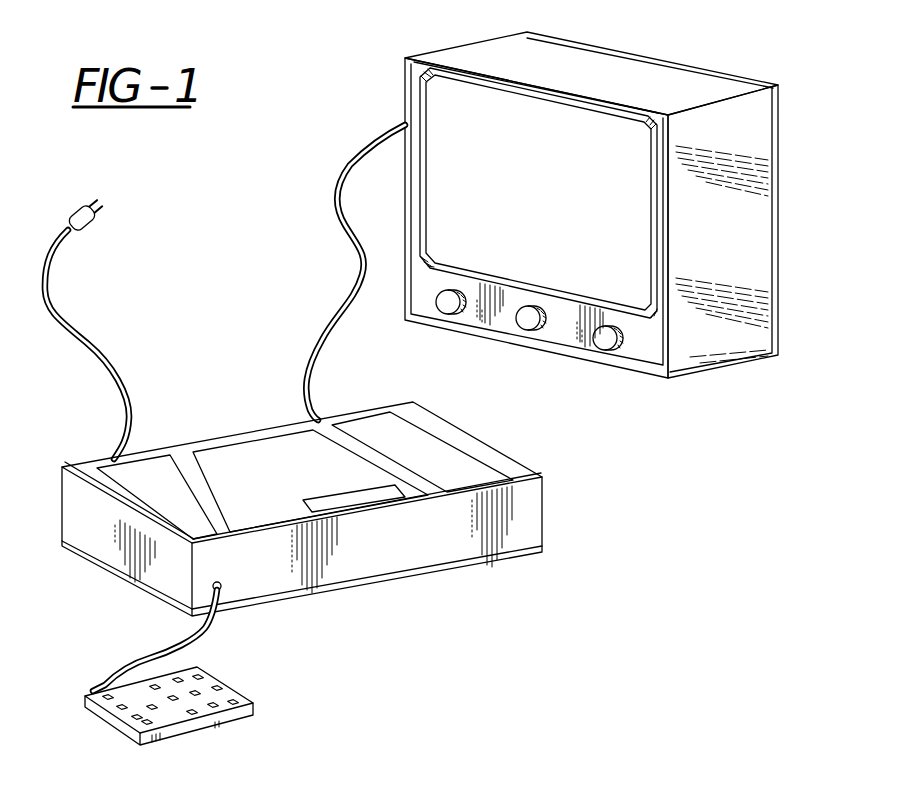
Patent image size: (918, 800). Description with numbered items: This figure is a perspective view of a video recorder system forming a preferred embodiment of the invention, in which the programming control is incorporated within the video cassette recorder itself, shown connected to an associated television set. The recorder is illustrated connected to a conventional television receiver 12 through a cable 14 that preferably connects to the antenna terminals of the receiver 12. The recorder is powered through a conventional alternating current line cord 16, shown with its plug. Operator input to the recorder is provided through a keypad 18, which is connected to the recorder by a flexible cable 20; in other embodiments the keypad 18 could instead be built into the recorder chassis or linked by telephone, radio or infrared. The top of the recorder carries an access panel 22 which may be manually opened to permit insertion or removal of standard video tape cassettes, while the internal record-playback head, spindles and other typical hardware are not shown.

The television receiver 12 is at (405, 97).
The cable 14 is at (353, 283).
The alternating current line cord 16 is at (55, 250).
The keypad 18 is at (88, 693).
The flexible cable 20 is at (203, 640).
The access panel 22 is at (312, 483).